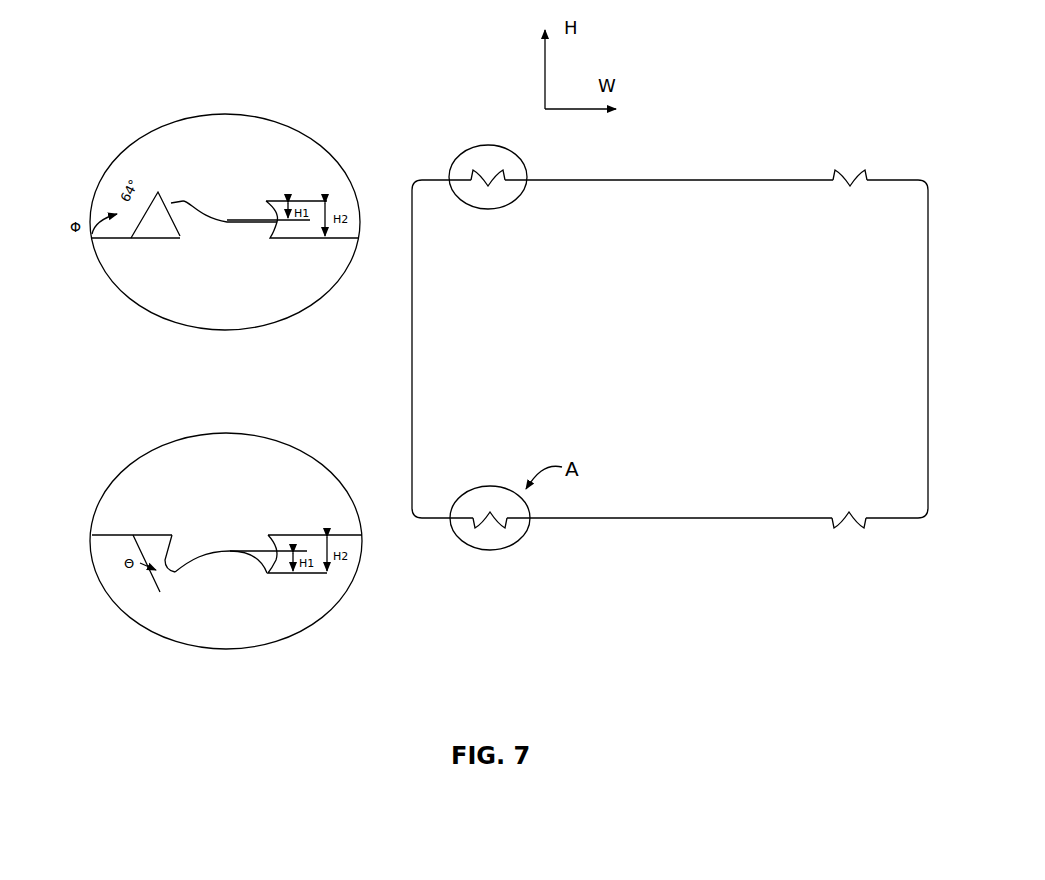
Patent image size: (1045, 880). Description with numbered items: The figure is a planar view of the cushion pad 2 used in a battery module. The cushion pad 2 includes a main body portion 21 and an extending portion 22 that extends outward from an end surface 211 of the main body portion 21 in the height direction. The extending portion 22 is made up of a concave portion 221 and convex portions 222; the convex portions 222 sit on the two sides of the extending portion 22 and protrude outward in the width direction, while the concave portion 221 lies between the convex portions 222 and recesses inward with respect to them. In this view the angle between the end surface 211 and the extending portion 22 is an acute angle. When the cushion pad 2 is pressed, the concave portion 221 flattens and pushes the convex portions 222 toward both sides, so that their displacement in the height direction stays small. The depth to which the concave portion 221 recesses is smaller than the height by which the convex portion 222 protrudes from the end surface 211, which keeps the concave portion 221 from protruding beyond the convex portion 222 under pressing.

The cushion pad 2 is at (893, 146).
The main body portion 21 is at (430, 323).
The end surface 211 is at (647, 180).
The extending portion 22 is at (488, 170).
The concave portion 221 is at (230, 207).
The convex portion 222 is at (183, 200).